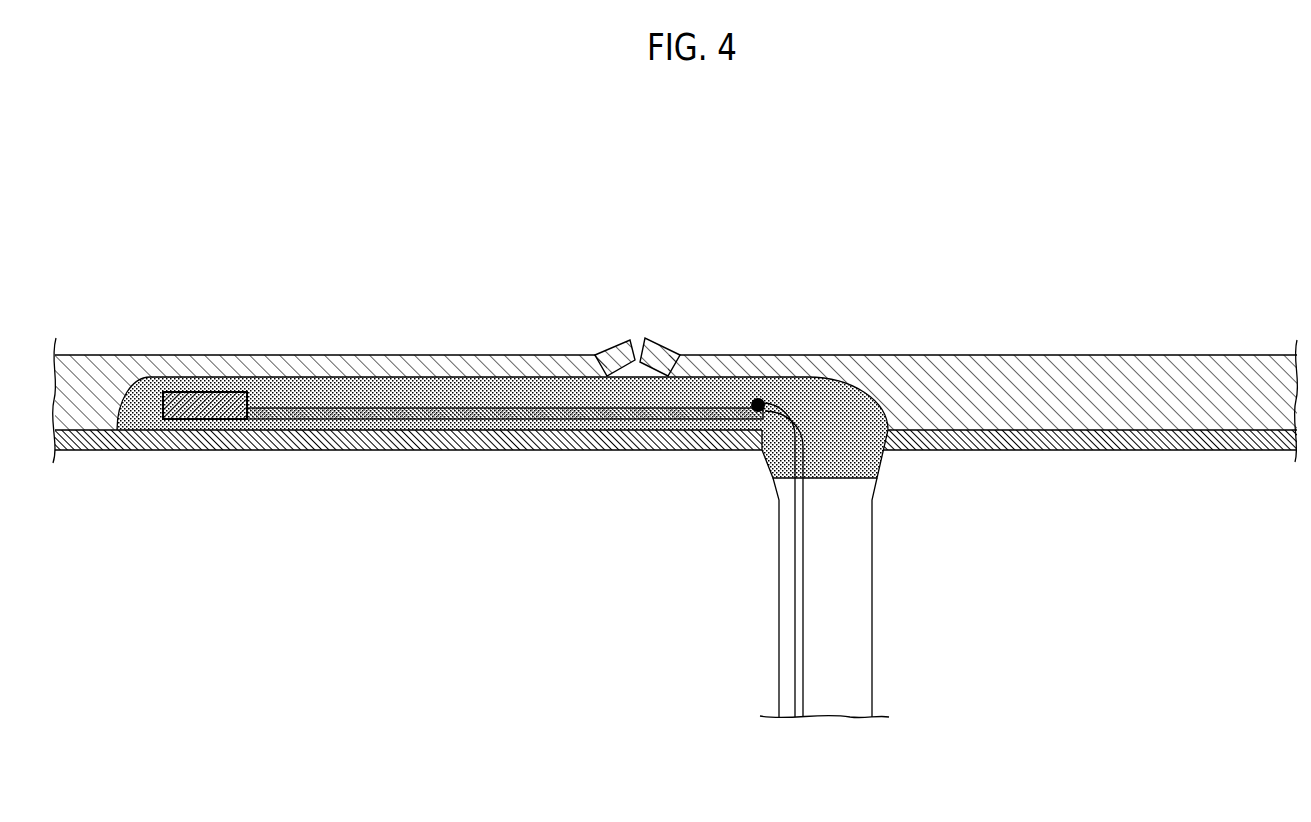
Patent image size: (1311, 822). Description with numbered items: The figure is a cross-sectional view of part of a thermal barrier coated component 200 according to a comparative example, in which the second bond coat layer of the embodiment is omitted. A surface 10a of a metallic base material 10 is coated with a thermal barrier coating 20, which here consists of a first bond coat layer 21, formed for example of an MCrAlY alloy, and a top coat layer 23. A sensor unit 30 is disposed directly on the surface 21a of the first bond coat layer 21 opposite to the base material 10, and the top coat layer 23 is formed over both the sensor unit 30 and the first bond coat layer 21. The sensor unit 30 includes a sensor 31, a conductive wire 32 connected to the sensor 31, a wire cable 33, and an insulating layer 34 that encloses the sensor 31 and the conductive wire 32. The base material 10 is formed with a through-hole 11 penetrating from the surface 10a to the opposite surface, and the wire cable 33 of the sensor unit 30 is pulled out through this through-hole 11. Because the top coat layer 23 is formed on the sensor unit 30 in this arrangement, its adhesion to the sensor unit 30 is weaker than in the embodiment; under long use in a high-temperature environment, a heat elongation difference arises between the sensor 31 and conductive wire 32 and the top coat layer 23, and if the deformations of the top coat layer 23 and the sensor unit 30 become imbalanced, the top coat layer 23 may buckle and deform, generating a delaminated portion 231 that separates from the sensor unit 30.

The thermal barrier coated component 200 is at (1150, 225).
The base material 10 is at (566, 477).
The surface 10a is at (657, 451).
The thermal barrier coating 20 is at (1066, 319).
The first bond coat layer 21 is at (482, 451).
The surface 21a is at (388, 432).
The top coat layer 23 is at (957, 373).
The delaminated portion 231 is at (653, 328).
The sensor unit 30 is at (146, 368).
The sensor 31 is at (208, 392).
The conductive wire 32 is at (310, 406).
The wire cable 33 is at (807, 662).
The insulating layer 34 is at (403, 395).
The through-hole 11 is at (870, 662).